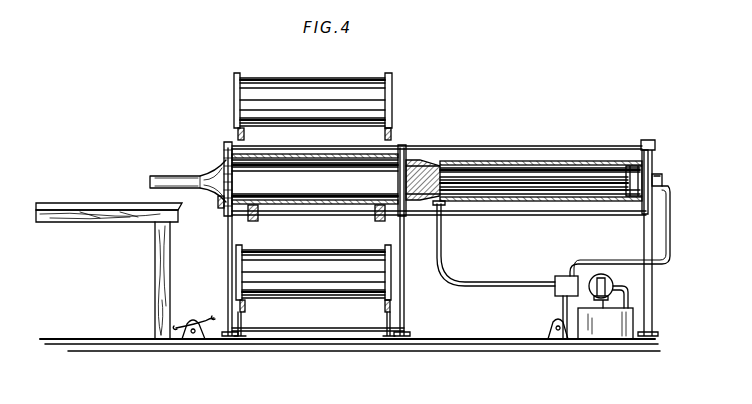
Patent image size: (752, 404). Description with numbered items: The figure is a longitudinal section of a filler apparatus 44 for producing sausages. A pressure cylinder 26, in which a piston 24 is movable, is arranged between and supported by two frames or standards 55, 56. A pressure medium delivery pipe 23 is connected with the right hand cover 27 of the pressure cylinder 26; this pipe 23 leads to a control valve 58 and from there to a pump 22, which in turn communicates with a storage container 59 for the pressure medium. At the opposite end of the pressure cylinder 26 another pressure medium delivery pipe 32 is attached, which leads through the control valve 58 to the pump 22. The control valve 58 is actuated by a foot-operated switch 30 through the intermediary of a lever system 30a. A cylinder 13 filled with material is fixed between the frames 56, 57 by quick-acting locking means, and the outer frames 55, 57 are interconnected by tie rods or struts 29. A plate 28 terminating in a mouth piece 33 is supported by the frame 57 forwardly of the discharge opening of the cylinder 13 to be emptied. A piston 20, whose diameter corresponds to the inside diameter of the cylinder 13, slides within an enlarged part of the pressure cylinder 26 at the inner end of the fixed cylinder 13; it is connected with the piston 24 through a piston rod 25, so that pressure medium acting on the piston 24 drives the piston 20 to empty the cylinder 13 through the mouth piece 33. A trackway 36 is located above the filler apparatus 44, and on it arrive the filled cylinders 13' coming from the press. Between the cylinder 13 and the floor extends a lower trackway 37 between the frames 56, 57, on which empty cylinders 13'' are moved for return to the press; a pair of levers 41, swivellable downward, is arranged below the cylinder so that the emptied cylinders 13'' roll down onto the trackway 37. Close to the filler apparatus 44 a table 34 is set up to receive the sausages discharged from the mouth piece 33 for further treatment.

The filled cylinder 13' is at (313, 90).
The cylinder 13 is at (315, 200).
The empty cylinder 13'' is at (314, 290).
The piston 20 is at (421, 206).
The pump 22 is at (599, 274).
The pressure medium delivery pipe 23 is at (664, 226).
The piston 24 is at (634, 168).
The piston rod 25 is at (530, 178).
The pressure cylinder 26 is at (442, 162).
The right hand cover 27 is at (656, 178).
The plate 28 is at (220, 170).
The tie rods 29 is at (505, 147).
The foot-operated switch 30 is at (192, 329).
The lever system 30a is at (208, 316).
The pressure medium delivery pipe 32 is at (473, 288).
The mouth piece 33 is at (168, 178).
The table 34 is at (90, 204).
The trackway 36 is at (244, 136).
The lower trackway 37 is at (246, 309).
The levers 41 is at (254, 223).
The filler apparatus 44 is at (535, 249).
The frame 55 is at (653, 295).
The frame 56 is at (404, 272).
The frame 57 is at (227, 234).
The control valve 58 is at (555, 295).
The storage container 59 is at (600, 334).